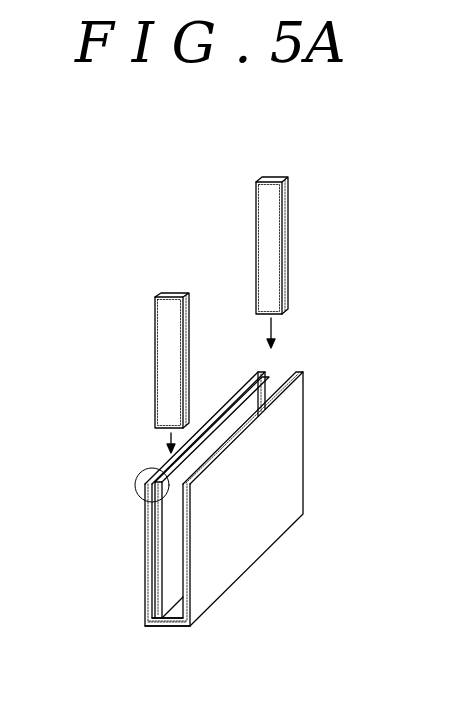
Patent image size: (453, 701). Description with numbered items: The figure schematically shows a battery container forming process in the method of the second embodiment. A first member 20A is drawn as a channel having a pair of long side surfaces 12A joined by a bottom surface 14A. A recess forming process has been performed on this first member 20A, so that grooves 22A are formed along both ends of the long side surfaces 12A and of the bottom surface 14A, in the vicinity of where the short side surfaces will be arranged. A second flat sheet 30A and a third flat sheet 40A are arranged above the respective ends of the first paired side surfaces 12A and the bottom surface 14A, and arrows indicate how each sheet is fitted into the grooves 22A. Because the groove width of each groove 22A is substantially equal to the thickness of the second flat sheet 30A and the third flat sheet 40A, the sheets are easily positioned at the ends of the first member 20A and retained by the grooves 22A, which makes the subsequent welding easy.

The long side surfaces 12A is at (145, 532).
The bottom surface 14A is at (157, 627).
The first member 20A is at (210, 496).
The grooves 22A is at (162, 580).
The second flat sheet 30A is at (158, 295).
The third flat sheet 40A is at (287, 198).